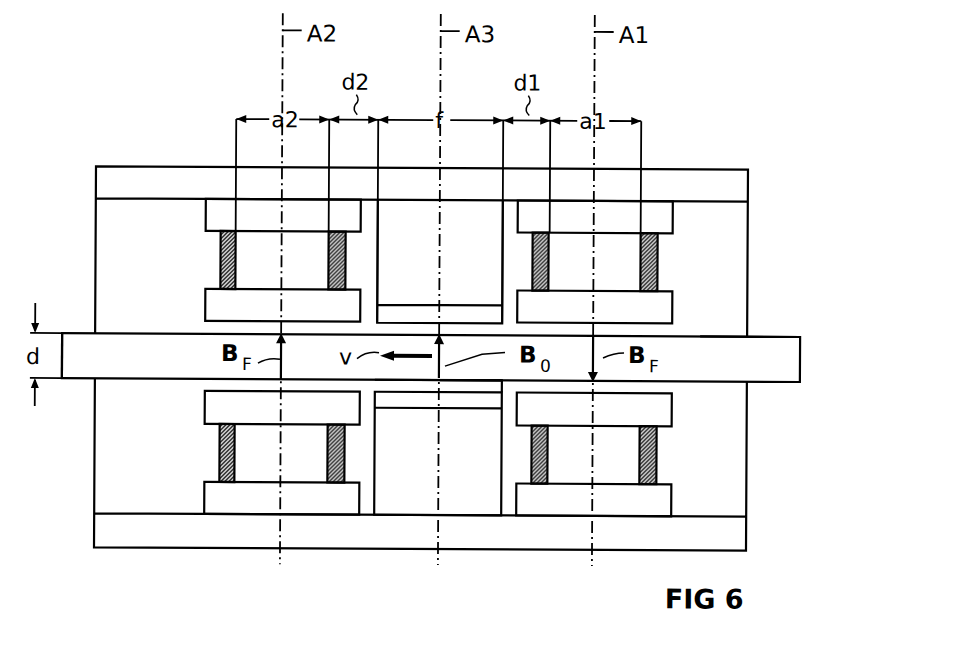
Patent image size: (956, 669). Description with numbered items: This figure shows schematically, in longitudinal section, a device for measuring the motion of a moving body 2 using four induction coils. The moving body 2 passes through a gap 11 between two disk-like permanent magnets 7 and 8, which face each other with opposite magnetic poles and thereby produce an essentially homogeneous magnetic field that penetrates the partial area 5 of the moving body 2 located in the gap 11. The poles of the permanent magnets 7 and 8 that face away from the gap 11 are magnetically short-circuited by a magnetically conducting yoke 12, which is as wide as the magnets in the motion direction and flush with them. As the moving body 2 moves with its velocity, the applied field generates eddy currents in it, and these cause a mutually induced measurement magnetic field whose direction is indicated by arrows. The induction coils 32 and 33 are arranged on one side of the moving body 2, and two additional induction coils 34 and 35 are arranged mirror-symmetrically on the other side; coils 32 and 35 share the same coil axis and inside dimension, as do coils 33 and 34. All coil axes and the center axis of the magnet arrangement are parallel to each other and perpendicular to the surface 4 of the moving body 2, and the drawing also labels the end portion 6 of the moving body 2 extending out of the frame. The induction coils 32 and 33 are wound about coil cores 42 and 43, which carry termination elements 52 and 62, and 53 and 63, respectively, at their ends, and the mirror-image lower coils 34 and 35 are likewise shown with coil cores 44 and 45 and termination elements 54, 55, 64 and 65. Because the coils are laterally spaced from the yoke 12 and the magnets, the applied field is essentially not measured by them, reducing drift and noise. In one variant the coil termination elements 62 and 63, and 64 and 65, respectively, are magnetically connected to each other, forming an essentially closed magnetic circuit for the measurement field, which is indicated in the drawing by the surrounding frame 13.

The moving body 2 is at (795, 358).
The surface 4 is at (783, 337).
The partial area 5 is at (467, 400).
The beam end 6 is at (118, 366).
The permanent magnet 7 is at (410, 305).
The permanent magnet 8 is at (417, 400).
The gap 11 is at (407, 383).
The yoke 12 is at (468, 488).
The frame yoke 13 is at (747, 184).
The induction coil 32 is at (657, 255).
The induction coil 33 is at (220, 250).
The induction coil 34 is at (220, 445).
The induction coil 35 is at (657, 447).
The coil core 42 is at (658, 262).
The coil core 43 is at (235, 259).
The electromagnet 44 is at (234, 452).
The electromagnet 45 is at (657, 455).
The termination element 52 is at (672, 305).
The termination element 53 is at (257, 305).
The pole plate 54 is at (208, 408).
The pole plate 55 is at (672, 412).
The coil termination element 62 is at (672, 220).
The coil termination element 63 is at (208, 218).
The coil termination element 64 is at (262, 462).
The coil termination element 65 is at (672, 498).